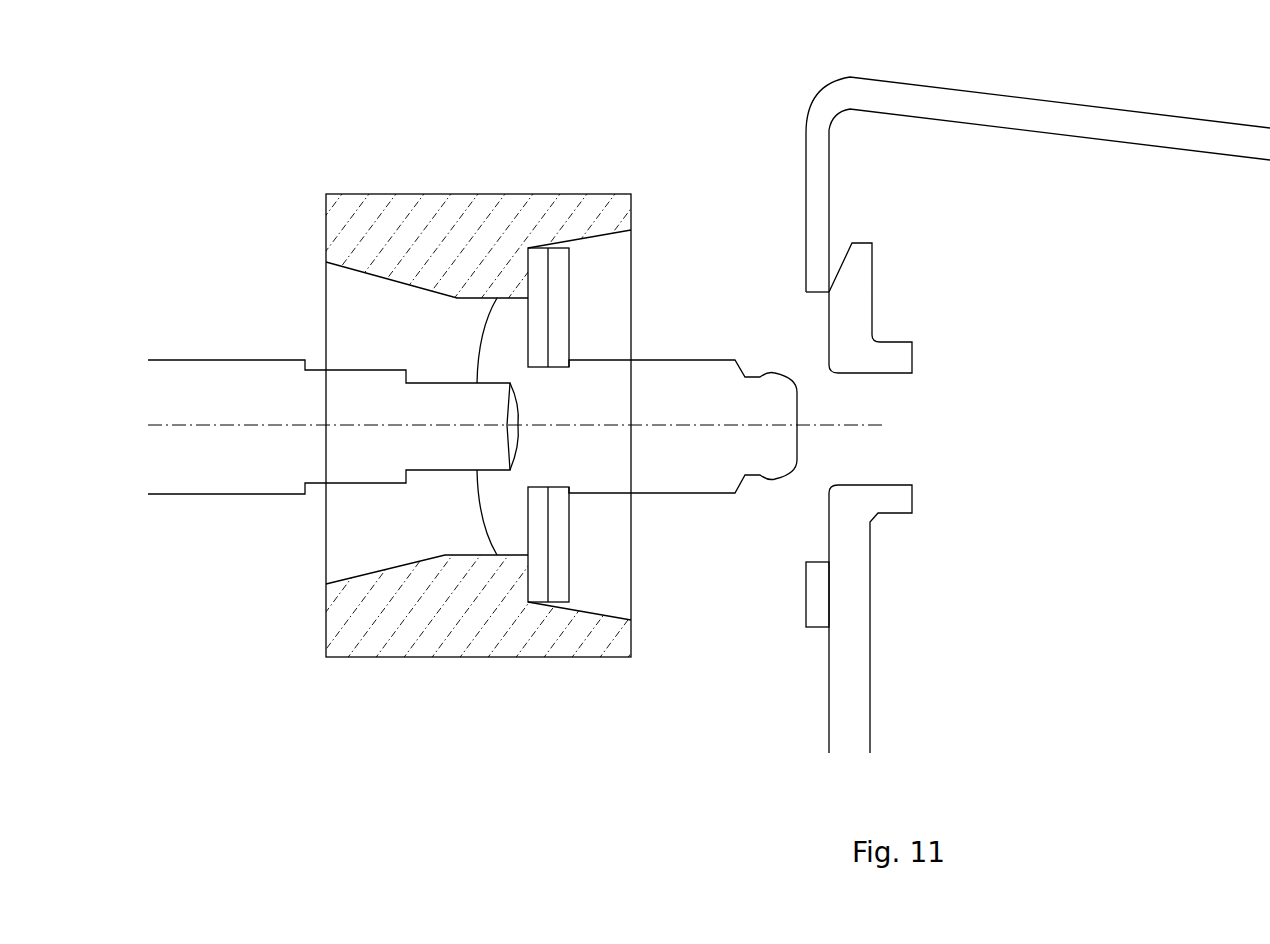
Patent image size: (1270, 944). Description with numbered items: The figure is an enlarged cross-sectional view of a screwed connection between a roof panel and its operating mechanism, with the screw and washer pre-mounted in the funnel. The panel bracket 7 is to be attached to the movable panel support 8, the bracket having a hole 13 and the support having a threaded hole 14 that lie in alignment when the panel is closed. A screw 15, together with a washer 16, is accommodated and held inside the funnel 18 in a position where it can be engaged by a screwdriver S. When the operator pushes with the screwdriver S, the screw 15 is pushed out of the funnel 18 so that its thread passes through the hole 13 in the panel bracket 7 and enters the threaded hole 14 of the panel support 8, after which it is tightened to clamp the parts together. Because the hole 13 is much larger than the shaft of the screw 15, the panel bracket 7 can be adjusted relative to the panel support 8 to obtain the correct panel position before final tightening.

The panel bracket 7 is at (837, 102).
The panel support 8 is at (882, 355).
The hole 13 is at (819, 503).
The threaded hole 14 is at (888, 425).
The screw 15 is at (593, 455).
The washer 16 is at (535, 543).
The funnel 18 is at (342, 203).
The screwdriver S is at (185, 480).